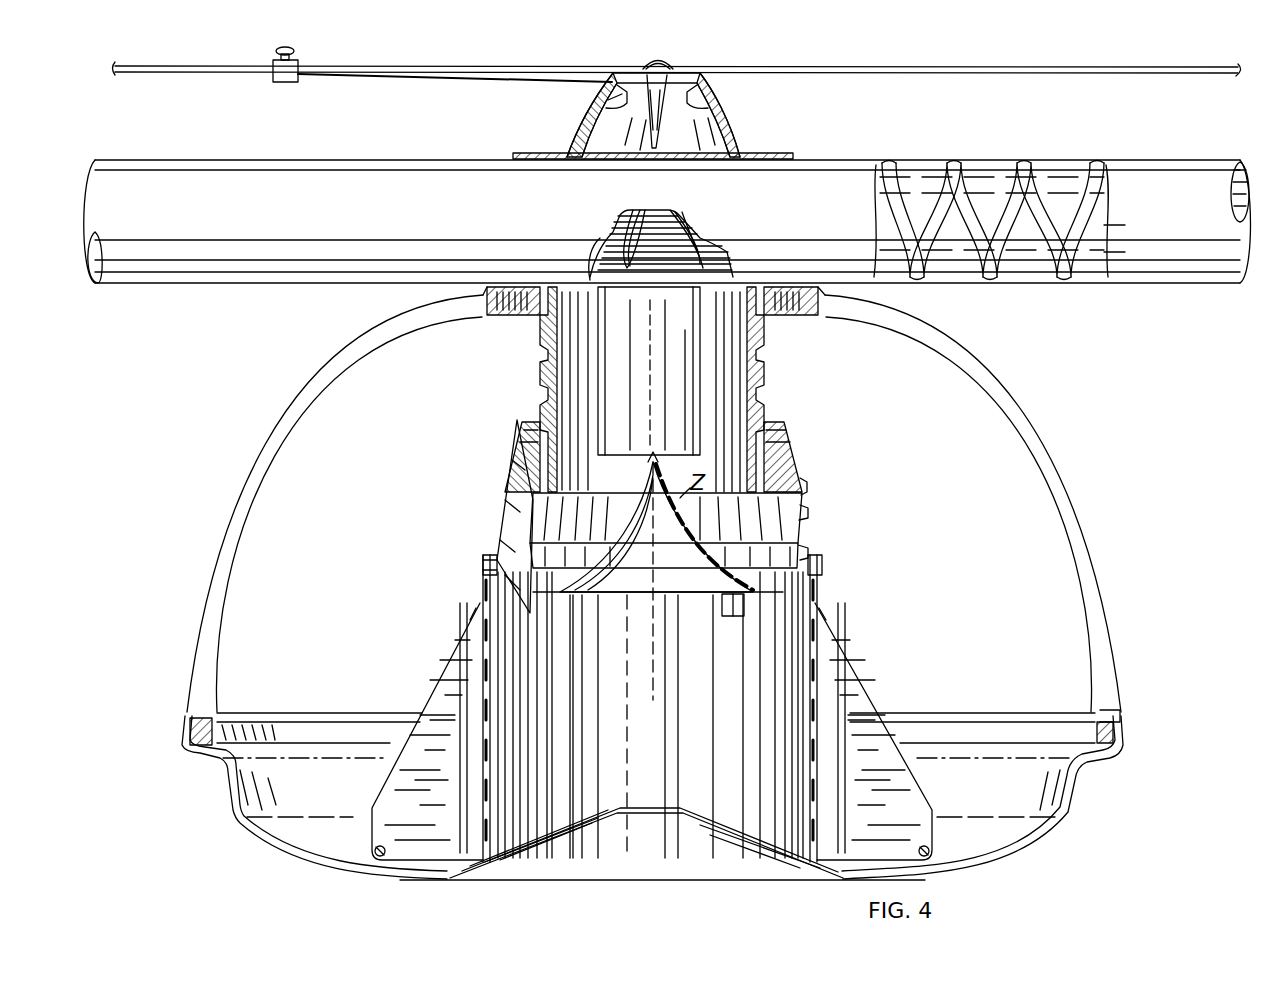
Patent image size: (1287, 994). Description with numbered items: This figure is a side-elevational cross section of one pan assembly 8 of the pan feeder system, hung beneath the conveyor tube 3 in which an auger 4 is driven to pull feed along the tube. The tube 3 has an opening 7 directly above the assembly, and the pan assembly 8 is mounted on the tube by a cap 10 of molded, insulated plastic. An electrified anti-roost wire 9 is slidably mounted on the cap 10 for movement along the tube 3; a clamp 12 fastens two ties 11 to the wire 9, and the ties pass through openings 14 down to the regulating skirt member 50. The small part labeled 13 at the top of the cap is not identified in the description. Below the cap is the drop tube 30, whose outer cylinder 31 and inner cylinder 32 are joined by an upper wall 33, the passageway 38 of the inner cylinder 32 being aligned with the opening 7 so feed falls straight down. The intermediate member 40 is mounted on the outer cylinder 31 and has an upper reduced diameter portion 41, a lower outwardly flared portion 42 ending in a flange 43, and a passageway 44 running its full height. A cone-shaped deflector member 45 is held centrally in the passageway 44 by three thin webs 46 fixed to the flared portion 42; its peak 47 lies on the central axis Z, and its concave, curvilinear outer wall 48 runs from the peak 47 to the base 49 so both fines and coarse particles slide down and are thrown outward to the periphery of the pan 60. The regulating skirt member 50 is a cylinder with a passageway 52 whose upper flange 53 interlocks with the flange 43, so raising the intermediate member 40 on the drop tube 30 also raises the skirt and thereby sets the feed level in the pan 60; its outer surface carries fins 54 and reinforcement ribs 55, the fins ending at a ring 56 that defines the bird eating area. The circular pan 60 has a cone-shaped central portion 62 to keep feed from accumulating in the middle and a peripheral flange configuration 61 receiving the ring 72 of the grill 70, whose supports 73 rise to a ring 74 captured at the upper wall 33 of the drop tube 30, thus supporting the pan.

The conveyor tube 3 is at (413, 200).
The auger 4 is at (597, 250).
The openings 7 is at (688, 270).
The pan assembly 8 is at (1113, 458).
The anti-roost wire 9 is at (940, 67).
The cap 10 is at (735, 125).
The ties 11 is at (473, 84).
The clamp 12 is at (298, 62).
The top cap 13 is at (668, 66).
The openings 14 is at (592, 108).
The drop tube 30 is at (775, 340).
The outer cylinder 31 is at (540, 355).
The inner cylinder 32 is at (682, 326).
The upper wall 33 is at (590, 308).
The passageway 38 is at (712, 405).
The intermediate member 40 is at (802, 482).
The upper reduced diameter portion 41 is at (790, 447).
The lower outwardly flared portion 42 is at (800, 512).
The flange 43 is at (802, 550).
The passageway 44 is at (793, 525).
The cone-shaped deflector member 45 is at (645, 578).
The thin webs 46 is at (525, 515).
The peak 47 is at (660, 455).
The outer wall 48 is at (657, 532).
The base 49 is at (748, 598).
The regulating skirt member 50 is at (817, 572).
The passageway 52 is at (815, 762).
The flange 53 is at (495, 556).
The fins 54 is at (855, 675).
The reinforcement ribs 55 is at (830, 650).
The ring 56 is at (925, 843).
The pan 60 is at (1100, 792).
The flange configuration 61 is at (1118, 710).
The central portion 62 is at (717, 848).
The grill 70 is at (1080, 513).
The ring 72 is at (1122, 735).
The supports 73 is at (1015, 423).
The ring 74 is at (818, 300).